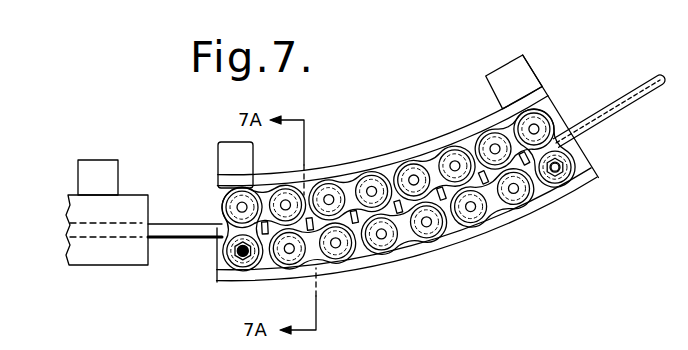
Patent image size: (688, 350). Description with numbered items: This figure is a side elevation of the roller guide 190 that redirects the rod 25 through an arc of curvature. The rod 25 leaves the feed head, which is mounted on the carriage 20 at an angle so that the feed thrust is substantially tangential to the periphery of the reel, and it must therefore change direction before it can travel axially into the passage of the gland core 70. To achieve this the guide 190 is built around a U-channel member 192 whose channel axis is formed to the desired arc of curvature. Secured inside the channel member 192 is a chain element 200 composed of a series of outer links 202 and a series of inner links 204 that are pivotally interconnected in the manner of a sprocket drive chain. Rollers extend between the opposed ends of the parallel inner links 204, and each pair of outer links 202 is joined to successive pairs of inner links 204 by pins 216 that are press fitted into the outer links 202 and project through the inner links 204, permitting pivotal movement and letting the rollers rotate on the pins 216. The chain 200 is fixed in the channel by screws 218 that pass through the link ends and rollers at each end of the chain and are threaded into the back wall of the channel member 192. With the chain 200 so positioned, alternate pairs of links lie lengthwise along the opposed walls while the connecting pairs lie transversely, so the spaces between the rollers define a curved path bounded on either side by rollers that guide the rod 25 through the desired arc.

The carriage 20 is at (124, 147).
The rod 25 is at (188, 210).
The gland core 70 is at (118, 258).
The guide 190 is at (504, 230).
The U-channel member 192 is at (468, 127).
The chain element 200 is at (450, 233).
The outer links 202 is at (265, 190).
The inner links 204 is at (562, 135).
The pins 216 is at (336, 246).
The screws 218 is at (556, 167).